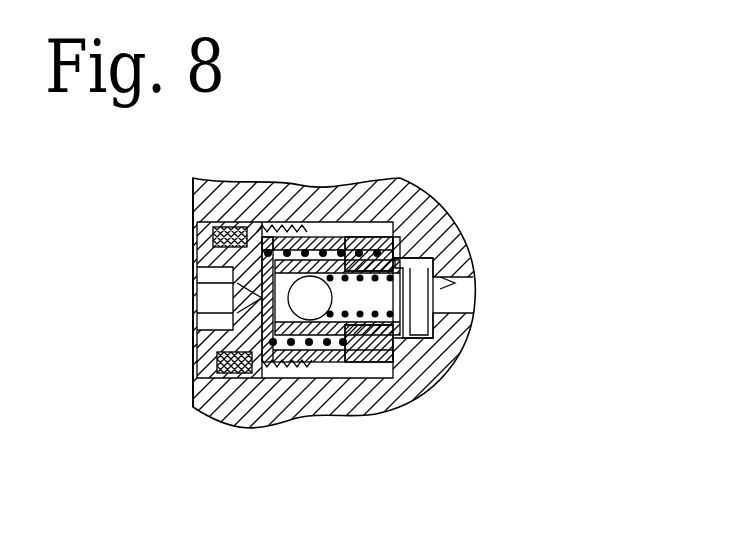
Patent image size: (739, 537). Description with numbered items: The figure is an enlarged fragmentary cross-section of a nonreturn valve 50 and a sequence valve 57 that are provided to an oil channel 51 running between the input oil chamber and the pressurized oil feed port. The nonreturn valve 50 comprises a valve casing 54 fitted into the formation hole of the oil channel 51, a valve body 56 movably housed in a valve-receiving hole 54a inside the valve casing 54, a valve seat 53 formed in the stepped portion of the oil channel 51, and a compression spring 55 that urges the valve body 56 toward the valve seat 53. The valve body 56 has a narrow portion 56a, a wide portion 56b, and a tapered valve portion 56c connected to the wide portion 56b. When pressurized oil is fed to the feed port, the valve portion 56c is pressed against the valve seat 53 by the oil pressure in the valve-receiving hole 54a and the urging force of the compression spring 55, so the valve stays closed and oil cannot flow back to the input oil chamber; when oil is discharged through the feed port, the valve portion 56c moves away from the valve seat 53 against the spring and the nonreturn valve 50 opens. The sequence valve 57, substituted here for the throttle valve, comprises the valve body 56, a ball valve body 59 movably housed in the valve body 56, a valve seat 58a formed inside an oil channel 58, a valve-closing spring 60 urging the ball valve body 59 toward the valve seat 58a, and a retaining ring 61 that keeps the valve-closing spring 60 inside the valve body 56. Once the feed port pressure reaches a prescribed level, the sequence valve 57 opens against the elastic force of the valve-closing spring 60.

The nonreturn valve 50 is at (186, 337).
The oil channel 51 is at (472, 290).
The valve seat 53 is at (410, 250).
The valve casing 54 is at (192, 245).
The valve-receiving hole 54a is at (295, 368).
The compression spring 55 is at (338, 250).
The valve body 56 is at (415, 235).
The narrow portion 56a is at (272, 236).
The wide portion 56b is at (388, 236).
The tapered valve portion 56c is at (405, 345).
The sequence valve 57 is at (435, 262).
The oil channel 58 is at (395, 330).
The valve seat 58a is at (198, 260).
The ball valve body 59 is at (243, 378).
The valve-closing spring 60 is at (325, 320).
The retaining ring 61 is at (458, 318).